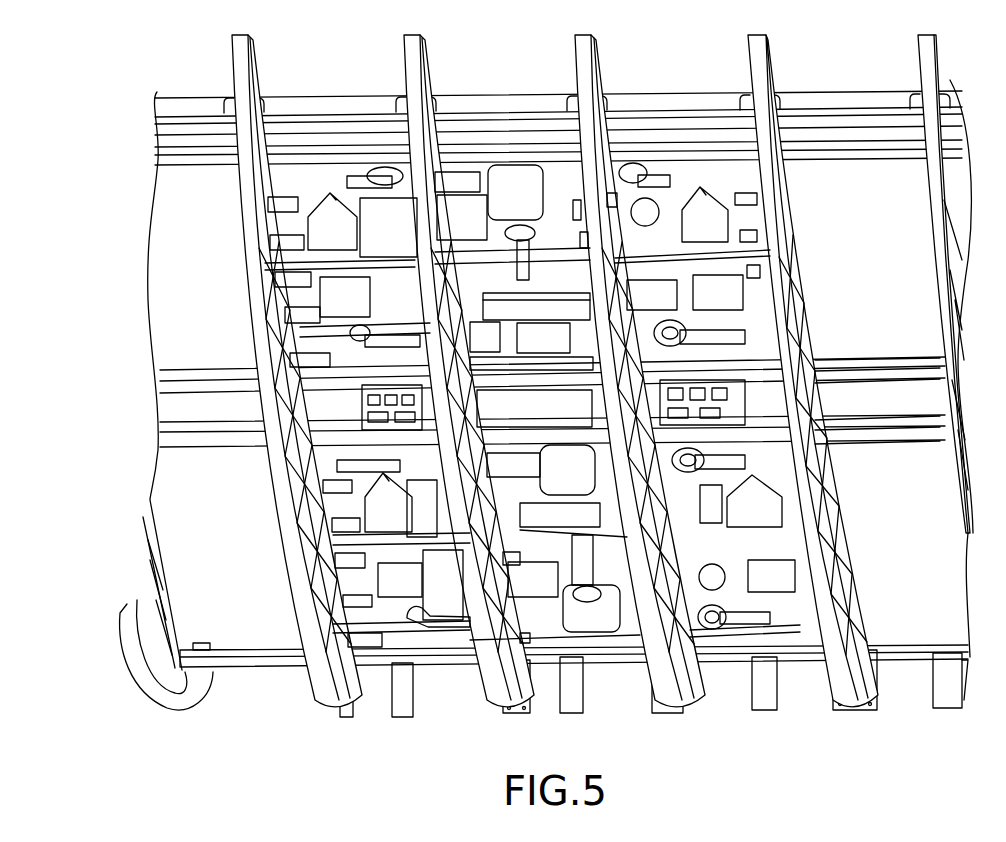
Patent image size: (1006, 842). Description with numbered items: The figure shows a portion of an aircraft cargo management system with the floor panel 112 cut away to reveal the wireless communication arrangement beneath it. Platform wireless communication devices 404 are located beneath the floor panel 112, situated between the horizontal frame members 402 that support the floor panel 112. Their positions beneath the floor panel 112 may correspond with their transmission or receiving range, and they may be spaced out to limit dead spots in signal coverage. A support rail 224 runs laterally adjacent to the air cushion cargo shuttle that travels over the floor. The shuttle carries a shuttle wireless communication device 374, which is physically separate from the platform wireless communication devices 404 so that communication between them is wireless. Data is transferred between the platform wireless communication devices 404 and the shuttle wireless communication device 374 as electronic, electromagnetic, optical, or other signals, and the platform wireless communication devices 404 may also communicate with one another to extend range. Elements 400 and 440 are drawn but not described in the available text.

The floor panel 112 is at (848, 182).
The support rail 224 is at (680, 137).
The shuttle wireless communication device 374 is at (733, 706).
The connector bar 400 is at (545, 520).
The horizontal frame member 402 is at (607, 197).
The platform wireless communication device 404 is at (640, 722).
The clip 440 is at (707, 507).